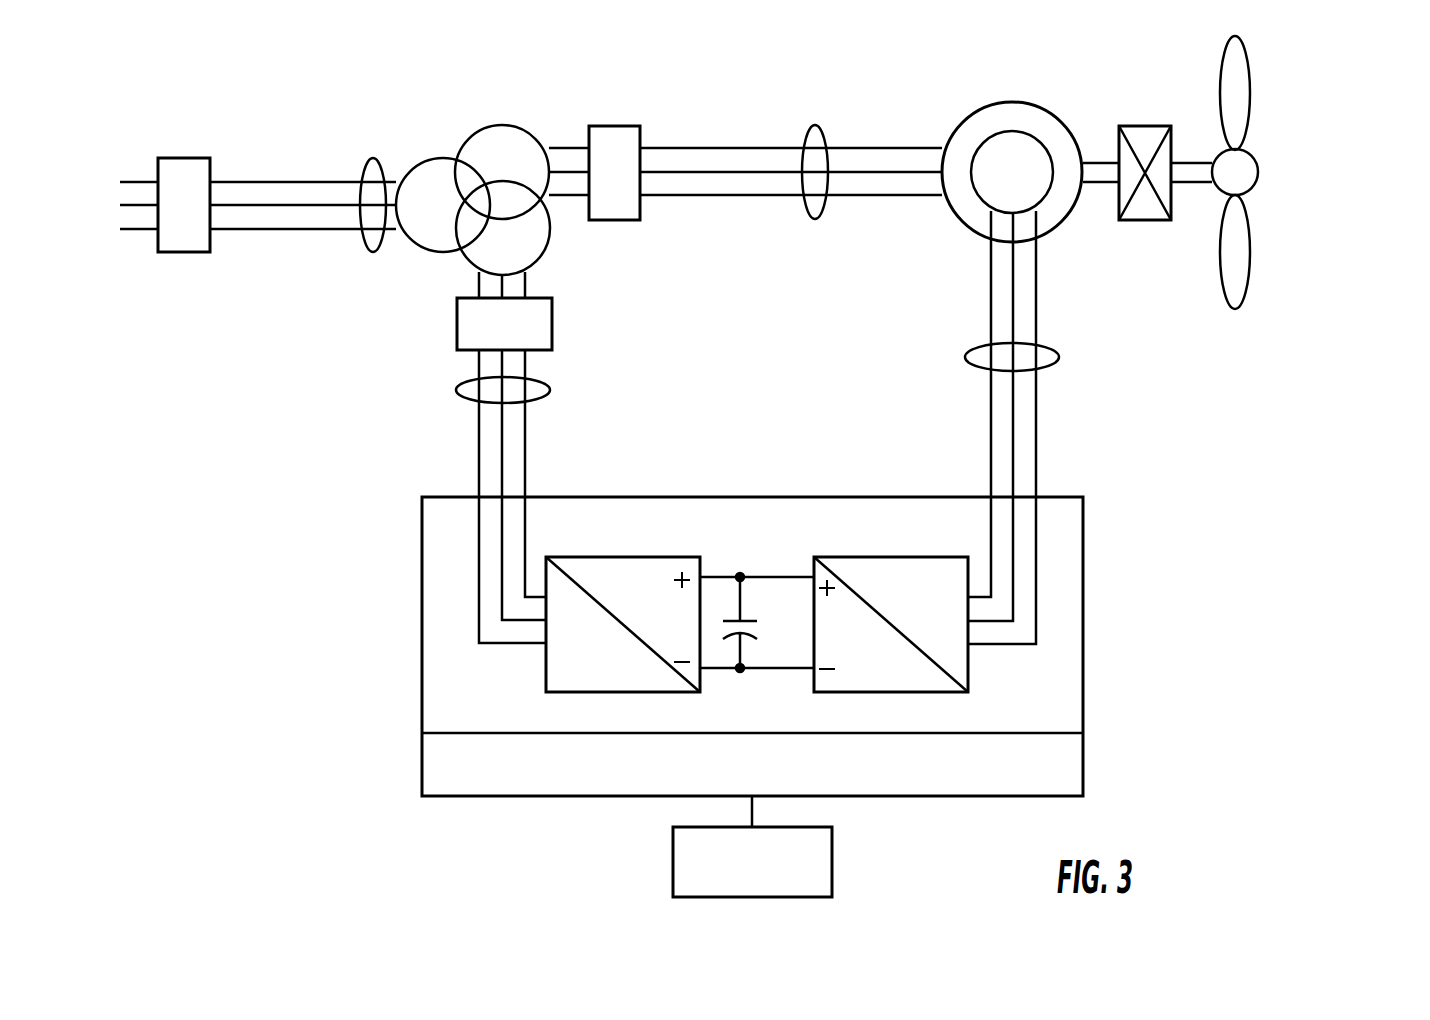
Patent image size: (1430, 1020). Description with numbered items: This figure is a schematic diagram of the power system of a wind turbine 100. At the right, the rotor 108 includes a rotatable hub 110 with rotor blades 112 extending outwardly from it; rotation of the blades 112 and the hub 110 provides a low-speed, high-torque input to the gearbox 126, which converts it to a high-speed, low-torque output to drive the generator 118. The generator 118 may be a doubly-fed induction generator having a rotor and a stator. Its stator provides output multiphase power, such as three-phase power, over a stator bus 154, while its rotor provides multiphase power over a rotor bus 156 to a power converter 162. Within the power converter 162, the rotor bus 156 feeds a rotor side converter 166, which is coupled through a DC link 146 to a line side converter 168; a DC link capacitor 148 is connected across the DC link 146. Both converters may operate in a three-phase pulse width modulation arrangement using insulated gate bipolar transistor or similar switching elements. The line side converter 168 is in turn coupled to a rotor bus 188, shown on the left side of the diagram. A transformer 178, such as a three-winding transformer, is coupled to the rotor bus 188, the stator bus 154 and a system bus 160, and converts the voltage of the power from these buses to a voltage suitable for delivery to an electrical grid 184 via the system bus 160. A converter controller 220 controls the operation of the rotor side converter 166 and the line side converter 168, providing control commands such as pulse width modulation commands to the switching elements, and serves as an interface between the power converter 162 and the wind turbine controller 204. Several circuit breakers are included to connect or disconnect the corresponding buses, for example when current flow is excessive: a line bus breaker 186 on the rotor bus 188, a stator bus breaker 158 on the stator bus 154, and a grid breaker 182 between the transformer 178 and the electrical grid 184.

The wind turbine 100 is at (691, 49).
The rotor 108 is at (1362, 110).
The hub 110 is at (1260, 166).
The rotor blade 112 is at (1250, 84).
The generator 118 is at (1005, 103).
The gearbox 126 is at (1132, 126).
The DC link 146 is at (758, 577).
The DC link capacitor 148 is at (734, 640).
The stator bus 154 is at (814, 126).
The rotor bus 156 is at (1060, 357).
The stator bus breaker 158 is at (600, 126).
The system bus 160 is at (372, 158).
The power converter 162 is at (1083, 558).
The rotor side converter 166 is at (968, 660).
The line side converter 168 is at (546, 667).
The transformer 178 is at (490, 125).
The grid breaker 182 is at (180, 157).
The electrical grid 184 is at (100, 180).
The line bus breaker 186 is at (457, 318).
The rotor bus 188 is at (457, 390).
The wind turbine controller 204 is at (832, 875).
The converter controller 220 is at (1083, 768).